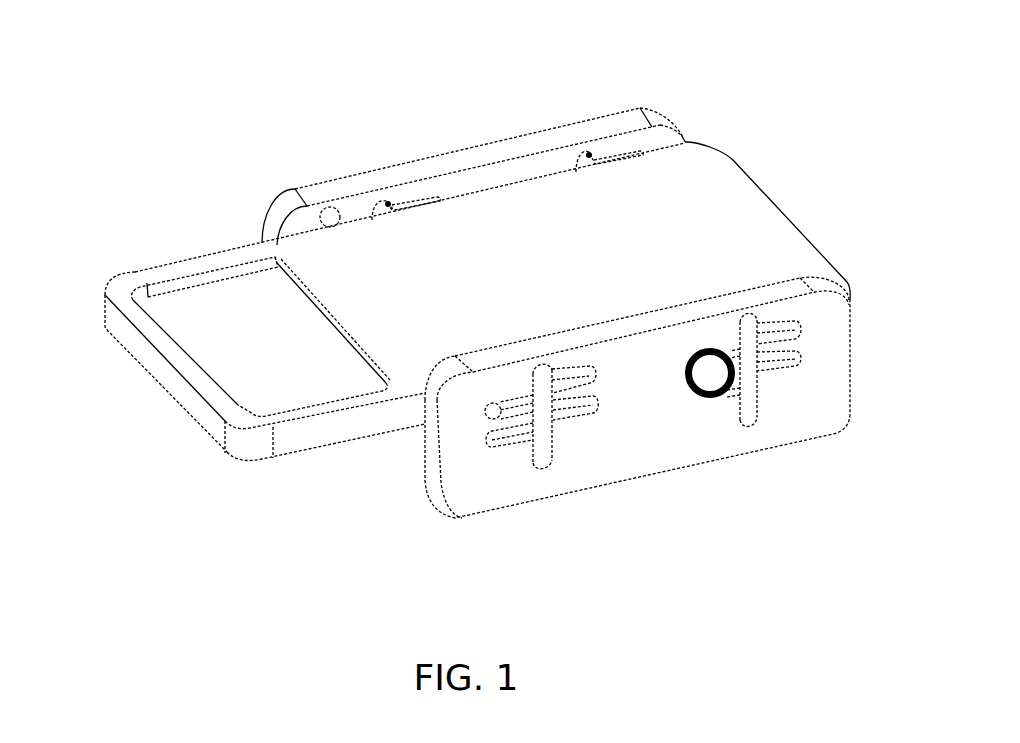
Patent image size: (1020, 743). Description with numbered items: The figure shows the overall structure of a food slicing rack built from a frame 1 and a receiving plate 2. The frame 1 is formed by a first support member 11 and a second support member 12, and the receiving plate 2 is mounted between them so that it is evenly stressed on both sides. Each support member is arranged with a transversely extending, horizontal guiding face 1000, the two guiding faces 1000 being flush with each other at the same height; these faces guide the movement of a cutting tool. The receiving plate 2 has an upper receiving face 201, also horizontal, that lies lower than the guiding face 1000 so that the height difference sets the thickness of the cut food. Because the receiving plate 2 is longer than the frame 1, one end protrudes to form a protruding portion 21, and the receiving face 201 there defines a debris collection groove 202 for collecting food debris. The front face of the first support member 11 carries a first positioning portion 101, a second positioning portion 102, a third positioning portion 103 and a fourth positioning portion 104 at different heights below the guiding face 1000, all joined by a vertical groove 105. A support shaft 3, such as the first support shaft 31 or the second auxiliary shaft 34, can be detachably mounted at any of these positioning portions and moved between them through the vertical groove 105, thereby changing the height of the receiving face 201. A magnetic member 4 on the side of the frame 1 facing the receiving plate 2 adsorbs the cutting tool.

The frame 1 is at (392, 64).
The first support member 11 is at (822, 407).
The second support member 12 is at (432, 157).
The guiding face 1000 is at (514, 148).
The receiving plate 2 is at (735, 158).
The receiving face 201 is at (743, 223).
The debris collection groove 202 is at (242, 372).
The protruding portion 21 is at (134, 338).
The support shaft 3 is at (372, 508).
The first support shaft 31 is at (717, 378).
The second auxiliary shaft 34 is at (485, 413).
The magnetic member 4 is at (325, 212).
The first positioning portion 101 is at (513, 412).
The second positioning portion 102 is at (497, 440).
The third positioning portion 103 is at (583, 387).
The fourth positioning portion 104 is at (570, 410).
The vertical groove 105 is at (533, 405).